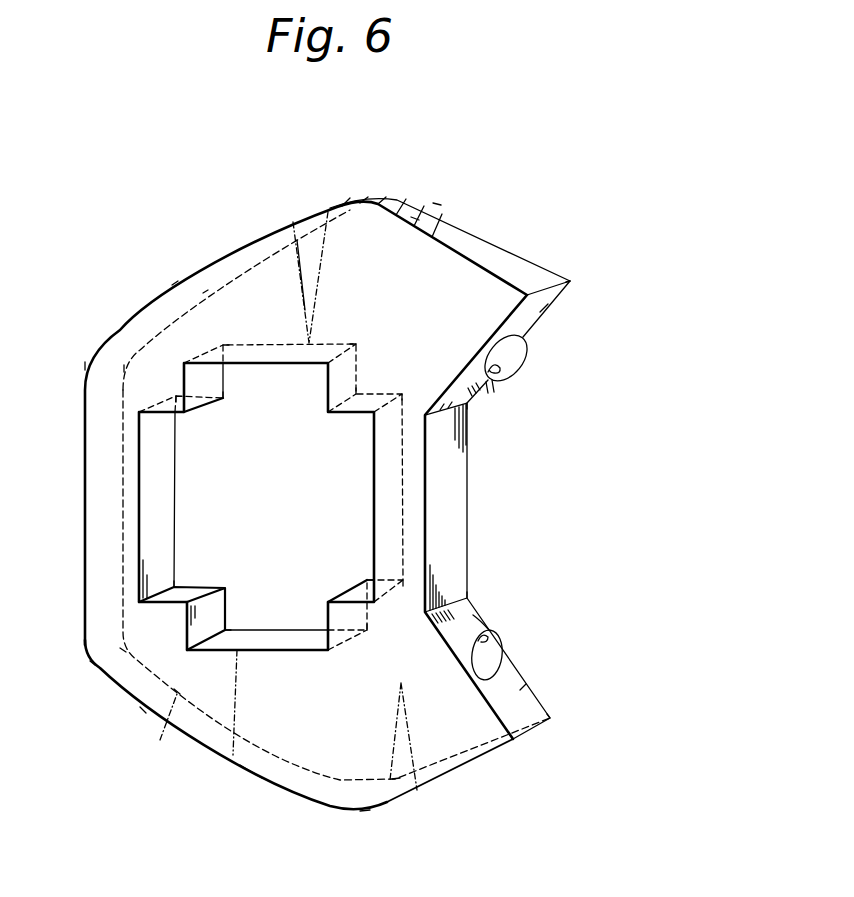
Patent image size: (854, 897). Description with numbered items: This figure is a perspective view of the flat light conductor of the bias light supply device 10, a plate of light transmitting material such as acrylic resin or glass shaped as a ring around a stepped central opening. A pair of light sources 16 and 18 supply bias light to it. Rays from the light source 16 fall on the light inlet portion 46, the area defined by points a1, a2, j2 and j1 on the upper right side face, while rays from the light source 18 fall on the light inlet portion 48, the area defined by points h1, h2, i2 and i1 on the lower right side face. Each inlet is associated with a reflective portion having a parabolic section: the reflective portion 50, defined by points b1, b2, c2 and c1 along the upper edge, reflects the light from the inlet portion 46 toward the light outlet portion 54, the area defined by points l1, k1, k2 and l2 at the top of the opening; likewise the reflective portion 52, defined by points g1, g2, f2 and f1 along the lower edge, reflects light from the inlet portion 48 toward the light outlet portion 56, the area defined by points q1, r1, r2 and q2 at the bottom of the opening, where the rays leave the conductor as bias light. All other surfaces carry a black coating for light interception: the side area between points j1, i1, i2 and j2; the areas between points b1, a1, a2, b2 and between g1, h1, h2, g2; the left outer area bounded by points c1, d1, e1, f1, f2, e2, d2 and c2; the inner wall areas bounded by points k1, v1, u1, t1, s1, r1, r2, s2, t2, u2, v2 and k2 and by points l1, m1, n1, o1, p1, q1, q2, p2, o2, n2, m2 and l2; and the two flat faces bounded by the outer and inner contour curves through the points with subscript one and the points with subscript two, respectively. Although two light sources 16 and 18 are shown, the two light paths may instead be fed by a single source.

The bias light supply device 10 is at (484, 184).
The light source 16 is at (523, 362).
The light source 18 is at (503, 655).
The light inlet portion 46 is at (533, 318).
The light inlet portion 48 is at (528, 688).
The reflective portion 50 is at (293, 221).
The reflective portion 52 is at (264, 780).
The light outlet portion 54 is at (277, 366).
The light outlet portion 56 is at (290, 647).
The point a1 is at (523, 297).
The point a2 is at (574, 280).
The point b1 is at (415, 214).
The point b2 is at (438, 200).
The point c1 is at (174, 279).
The point c2 is at (205, 288).
The point d1 is at (83, 362).
The point d2 is at (124, 366).
The point e1 is at (90, 664).
The point e2 is at (119, 650).
The point f1 is at (140, 714).
The point f2 is at (176, 696).
The point g1 is at (364, 812).
The point g2 is at (384, 782).
The point h1 is at (514, 743).
The point h2 is at (551, 722).
The point i1 is at (426, 617).
The point i2 is at (471, 597).
The point j1 is at (430, 420).
The point j2 is at (470, 406).
The point k1 is at (325, 366).
The point k2 is at (359, 341).
The point l1 is at (186, 359).
The point l2 is at (226, 342).
The point m1 is at (186, 416).
The point m2 is at (225, 402).
The point n1 is at (140, 408).
The point n2 is at (175, 392).
The point o1 is at (139, 606).
The point o2 is at (177, 584).
The point p1 is at (185, 607).
The point p2 is at (226, 584).
The point q1 is at (189, 654).
The point q2 is at (228, 627).
The point r1 is at (328, 654).
The point r2 is at (368, 634).
The point s1 is at (328, 598).
The point s2 is at (366, 576).
The point t1 is at (376, 606).
The point t2 is at (403, 584).
The point u1 is at (372, 416).
The point u2 is at (405, 391).
The point v1 is at (327, 416).
The point v2 is at (359, 391).